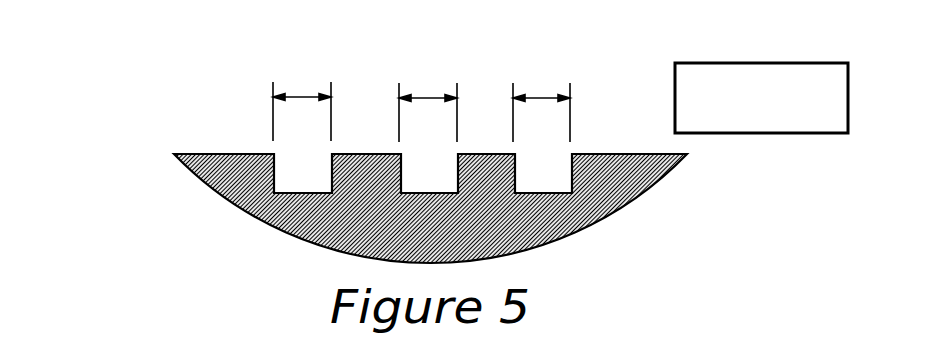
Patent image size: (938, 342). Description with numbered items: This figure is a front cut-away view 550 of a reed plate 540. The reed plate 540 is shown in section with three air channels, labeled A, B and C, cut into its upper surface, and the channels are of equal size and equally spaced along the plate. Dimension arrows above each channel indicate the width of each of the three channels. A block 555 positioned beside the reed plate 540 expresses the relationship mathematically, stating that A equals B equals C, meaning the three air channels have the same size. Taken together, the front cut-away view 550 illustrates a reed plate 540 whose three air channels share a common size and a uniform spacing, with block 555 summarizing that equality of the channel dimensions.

The front cut-away view 550 is at (120, 65).
The reed plate 540 is at (658, 190).
The block 555 is at (675, 88).